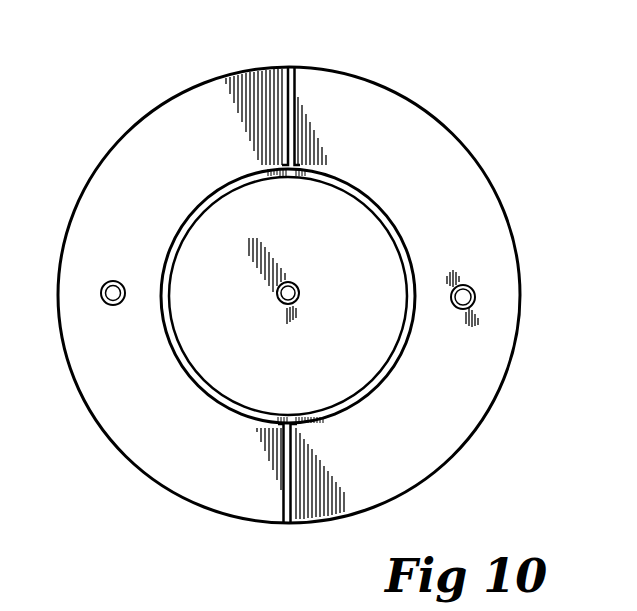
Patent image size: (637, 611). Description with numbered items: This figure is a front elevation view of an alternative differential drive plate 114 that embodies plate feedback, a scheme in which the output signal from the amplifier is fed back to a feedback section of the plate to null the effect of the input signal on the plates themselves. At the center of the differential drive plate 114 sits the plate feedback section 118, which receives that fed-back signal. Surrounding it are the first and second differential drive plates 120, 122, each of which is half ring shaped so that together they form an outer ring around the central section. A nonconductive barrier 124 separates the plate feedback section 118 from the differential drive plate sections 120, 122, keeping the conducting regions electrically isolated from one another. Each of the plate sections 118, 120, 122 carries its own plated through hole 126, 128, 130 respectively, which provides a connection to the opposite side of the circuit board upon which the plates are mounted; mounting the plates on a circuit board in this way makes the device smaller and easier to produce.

The differential drive plate 114 is at (91, 98).
The plate feedback section 118 is at (307, 218).
The first differential drive plate 120 is at (195, 170).
The second differential drive plate 122 is at (415, 170).
The nonconductive barrier 124 is at (291, 66).
The plated through hole 126 is at (284, 303).
The plated through hole 128 is at (109, 305).
The plated through hole 130 is at (455, 309).